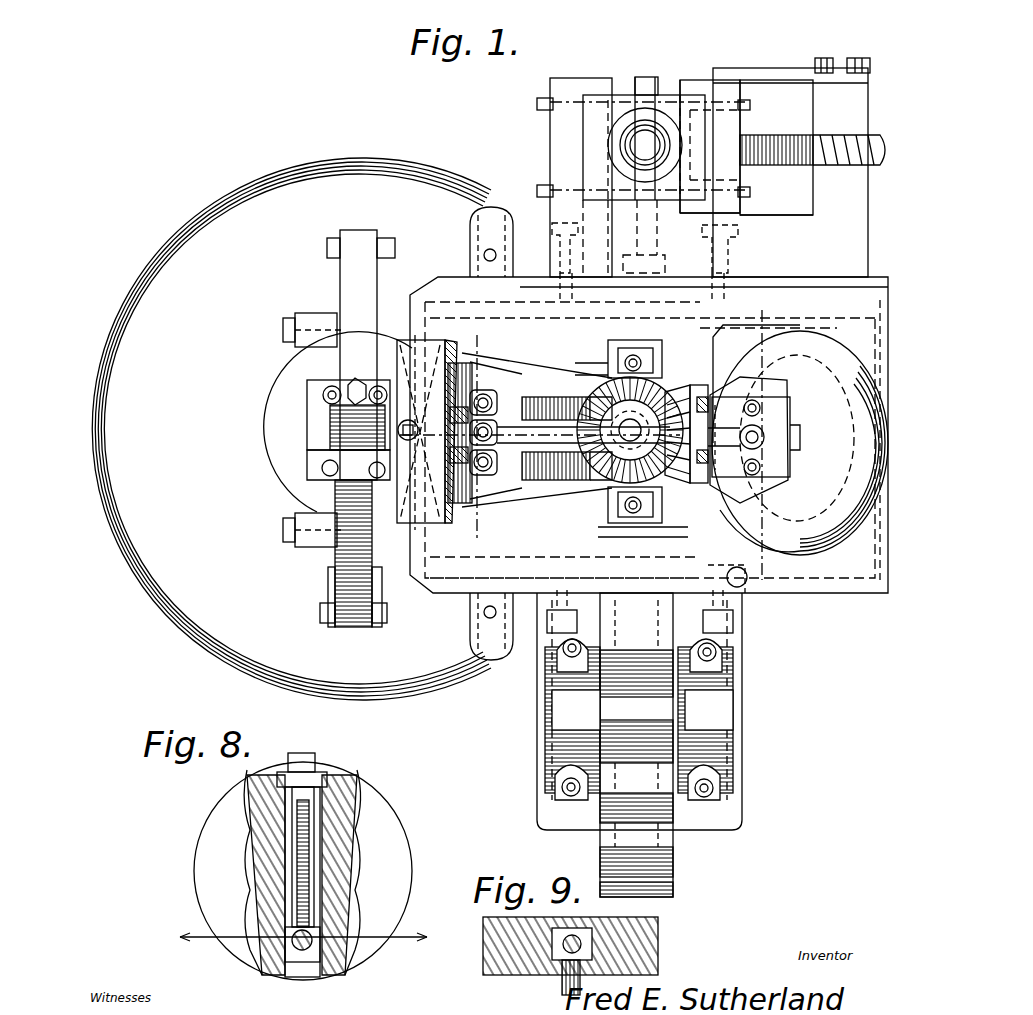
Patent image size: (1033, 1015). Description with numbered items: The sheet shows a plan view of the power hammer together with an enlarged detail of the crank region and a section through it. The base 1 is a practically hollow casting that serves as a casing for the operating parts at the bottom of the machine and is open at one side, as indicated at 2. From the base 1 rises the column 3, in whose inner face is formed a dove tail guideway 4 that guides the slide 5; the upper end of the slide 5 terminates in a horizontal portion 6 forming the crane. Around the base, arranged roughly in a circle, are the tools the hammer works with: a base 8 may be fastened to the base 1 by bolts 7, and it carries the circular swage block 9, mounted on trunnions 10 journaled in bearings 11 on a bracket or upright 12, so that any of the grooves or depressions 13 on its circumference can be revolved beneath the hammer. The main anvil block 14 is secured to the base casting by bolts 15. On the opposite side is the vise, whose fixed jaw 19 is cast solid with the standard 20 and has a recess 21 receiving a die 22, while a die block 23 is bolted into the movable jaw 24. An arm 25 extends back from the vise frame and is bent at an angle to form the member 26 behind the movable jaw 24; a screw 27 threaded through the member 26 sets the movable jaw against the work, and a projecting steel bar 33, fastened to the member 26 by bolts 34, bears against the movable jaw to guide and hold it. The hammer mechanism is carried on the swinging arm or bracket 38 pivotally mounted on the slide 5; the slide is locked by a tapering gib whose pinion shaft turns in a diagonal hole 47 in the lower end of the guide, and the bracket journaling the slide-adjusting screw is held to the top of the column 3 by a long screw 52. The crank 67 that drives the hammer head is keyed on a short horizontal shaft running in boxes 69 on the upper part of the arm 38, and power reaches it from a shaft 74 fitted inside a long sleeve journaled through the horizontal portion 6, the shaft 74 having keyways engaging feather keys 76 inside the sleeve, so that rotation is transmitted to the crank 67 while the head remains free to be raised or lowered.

In FIG. 1, the base portion 1 is at (852, 595).
In FIG. 1, the open side of base 2 is at (824, 51).
In FIG. 1, the column 3 is at (827, 537).
In FIG. 1, the dove tail guideway 4 is at (737, 383).
In FIG. 1, the slide 5 is at (710, 366).
In FIG. 1, the horizontal portion 6 is at (800, 445).
In FIG. 1, the bolts 7 is at (553, 222).
In FIG. 1, the base 8 is at (730, 808).
In FIG. 1, the swage block 9 is at (636, 741).
In FIG. 8, the swage block 9 is at (304, 937).
In FIG. 1, the trunnions 10 is at (590, 705).
In FIG. 1, the bearings 11 is at (565, 738).
In FIG. 1, the bracket 12 is at (548, 788).
In FIG. 1, the grooves 13 is at (636, 745).
In FIG. 1, the main anvil block 14 is at (288, 455).
In FIG. 1, the bolts 15 is at (290, 332).
In FIG. 1, the jaw 19 is at (570, 78).
In FIG. 1, the standard 20 is at (643, 174).
In FIG. 1, the recess 21 is at (598, 95).
In FIG. 1, the die 22 is at (627, 112).
In FIG. 1, the die block 23 is at (680, 100).
In FIG. 1, the movable jaw 24 is at (722, 95).
In FIG. 1, the arm 25 is at (776, 237).
In FIG. 1, the angled member 26 is at (795, 147).
In FIG. 1, the screw 27 is at (880, 140).
In FIG. 1, the projecting bar 33 is at (775, 75).
In FIG. 1, the bolts 34 is at (832, 58).
In FIG. 1, the swinging arm 38 is at (570, 463).
In FIG. 1, the diagonal hole 47 is at (793, 425).
In FIG. 1, the long screw 52 is at (872, 440).
In FIG. 1, the crank 67 is at (383, 470).
In FIG. 8, the crank 67 is at (303, 866).
In FIG. 9, the crank 67 is at (660, 937).
In FIG. 1, the box 69 is at (510, 430).
In FIG. 1, the shaft 74 is at (607, 457).
In FIG. 1, the feather keys 76 is at (686, 454).